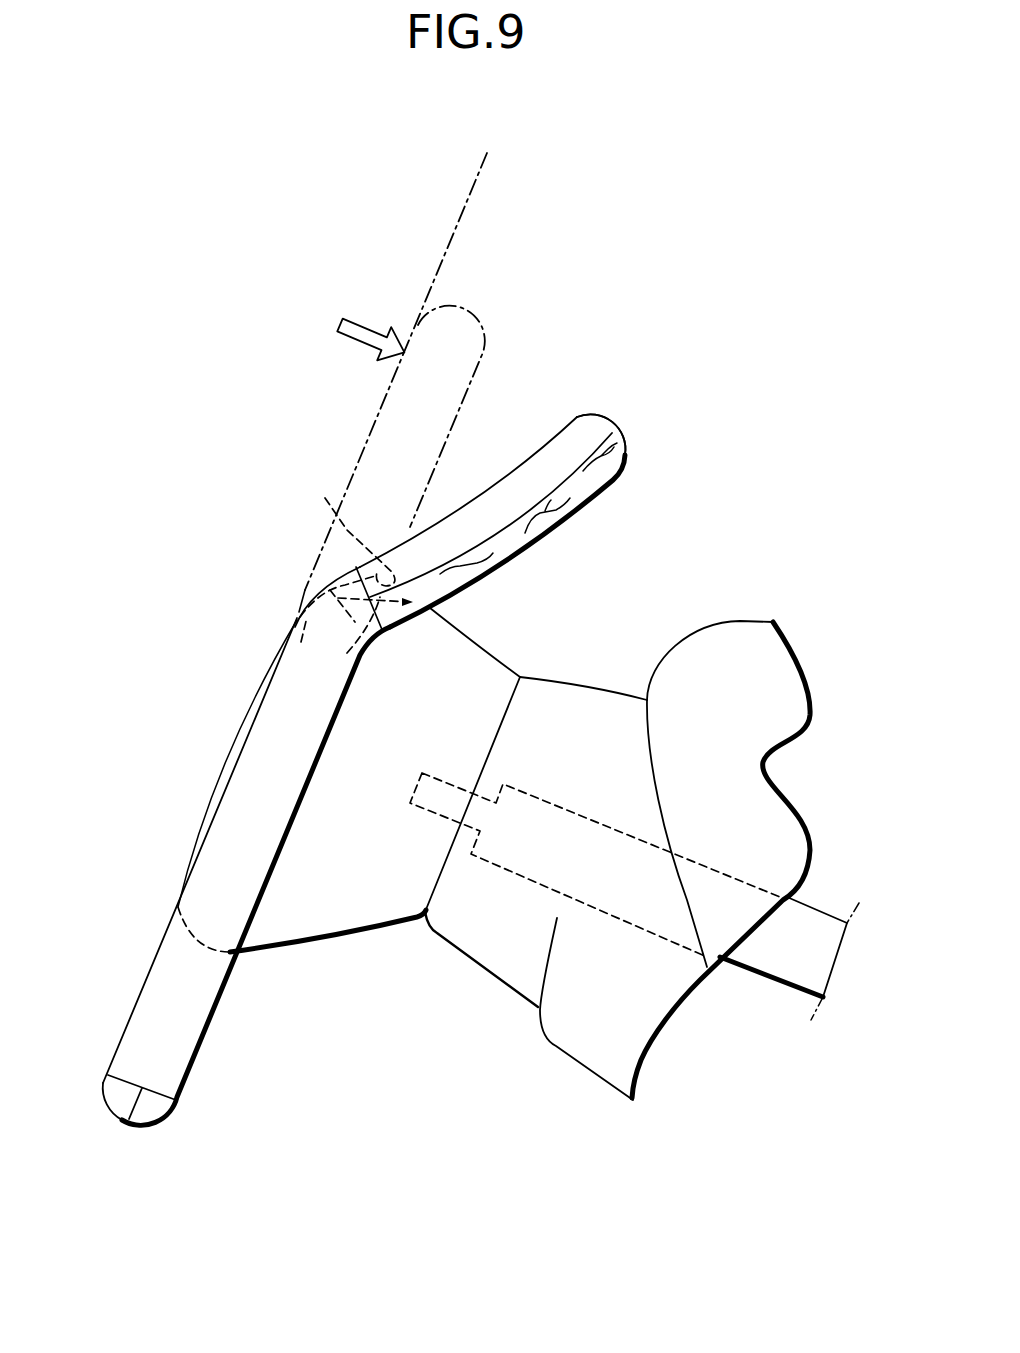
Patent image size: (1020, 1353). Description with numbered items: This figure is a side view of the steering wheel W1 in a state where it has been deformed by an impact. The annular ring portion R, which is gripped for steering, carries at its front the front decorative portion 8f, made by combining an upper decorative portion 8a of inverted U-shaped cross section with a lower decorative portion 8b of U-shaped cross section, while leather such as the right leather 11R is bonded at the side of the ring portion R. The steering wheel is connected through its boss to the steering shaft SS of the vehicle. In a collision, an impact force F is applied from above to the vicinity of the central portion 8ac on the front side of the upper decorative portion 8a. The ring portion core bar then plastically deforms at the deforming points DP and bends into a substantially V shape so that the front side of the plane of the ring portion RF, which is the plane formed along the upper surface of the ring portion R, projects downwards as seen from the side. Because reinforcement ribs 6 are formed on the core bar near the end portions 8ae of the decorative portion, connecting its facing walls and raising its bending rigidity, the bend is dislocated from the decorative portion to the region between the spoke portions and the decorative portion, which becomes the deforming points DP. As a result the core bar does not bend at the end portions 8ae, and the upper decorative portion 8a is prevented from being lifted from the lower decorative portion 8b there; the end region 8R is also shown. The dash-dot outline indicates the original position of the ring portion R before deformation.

The reinforcement rib 6 is at (330, 583).
The upper decorative portion 8a is at (557, 453).
The central portion of upper decorative portion 8ac is at (582, 417).
The end portion of decorative portion 8ae is at (344, 540).
The front decorative portion 8f is at (614, 416).
The lower decorative portion 8b is at (527, 557).
The right end of handle 8R is at (152, 1110).
The right leather 11R is at (205, 993).
The ring portion R is at (202, 1080).
The plane of the ring portion RF is at (445, 250).
The impact force F is at (356, 329).
The steering wheel W1 is at (647, 452).
The deforming point DP is at (295, 615).
The steering shaft SS is at (787, 973).